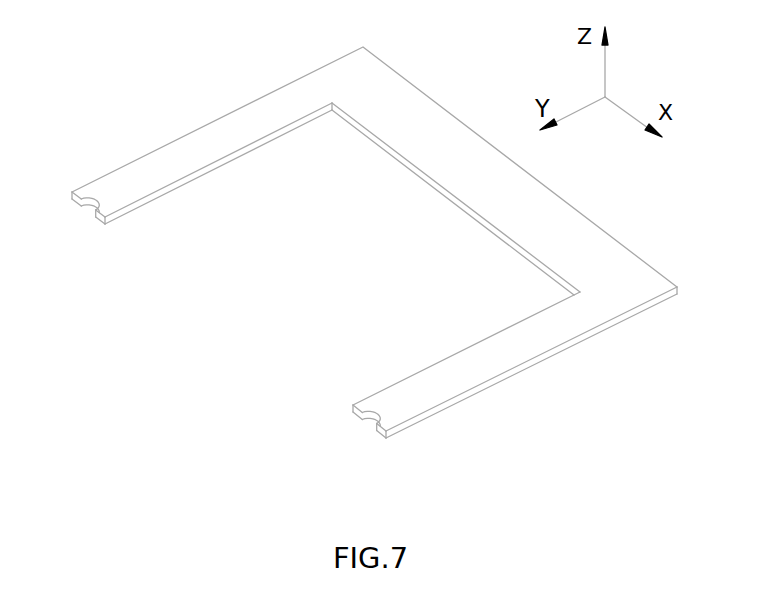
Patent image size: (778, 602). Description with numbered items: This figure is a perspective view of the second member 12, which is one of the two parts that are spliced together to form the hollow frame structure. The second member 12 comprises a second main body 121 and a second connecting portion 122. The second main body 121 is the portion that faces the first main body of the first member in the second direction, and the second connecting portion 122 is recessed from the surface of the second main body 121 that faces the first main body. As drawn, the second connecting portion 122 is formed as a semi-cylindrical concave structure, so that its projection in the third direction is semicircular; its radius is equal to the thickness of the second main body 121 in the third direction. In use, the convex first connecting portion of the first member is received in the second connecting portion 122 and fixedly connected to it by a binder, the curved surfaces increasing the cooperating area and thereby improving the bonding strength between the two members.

The second member 12 is at (176, 83).
The second main body 121 is at (218, 164).
The second connecting portion 122 is at (88, 205).